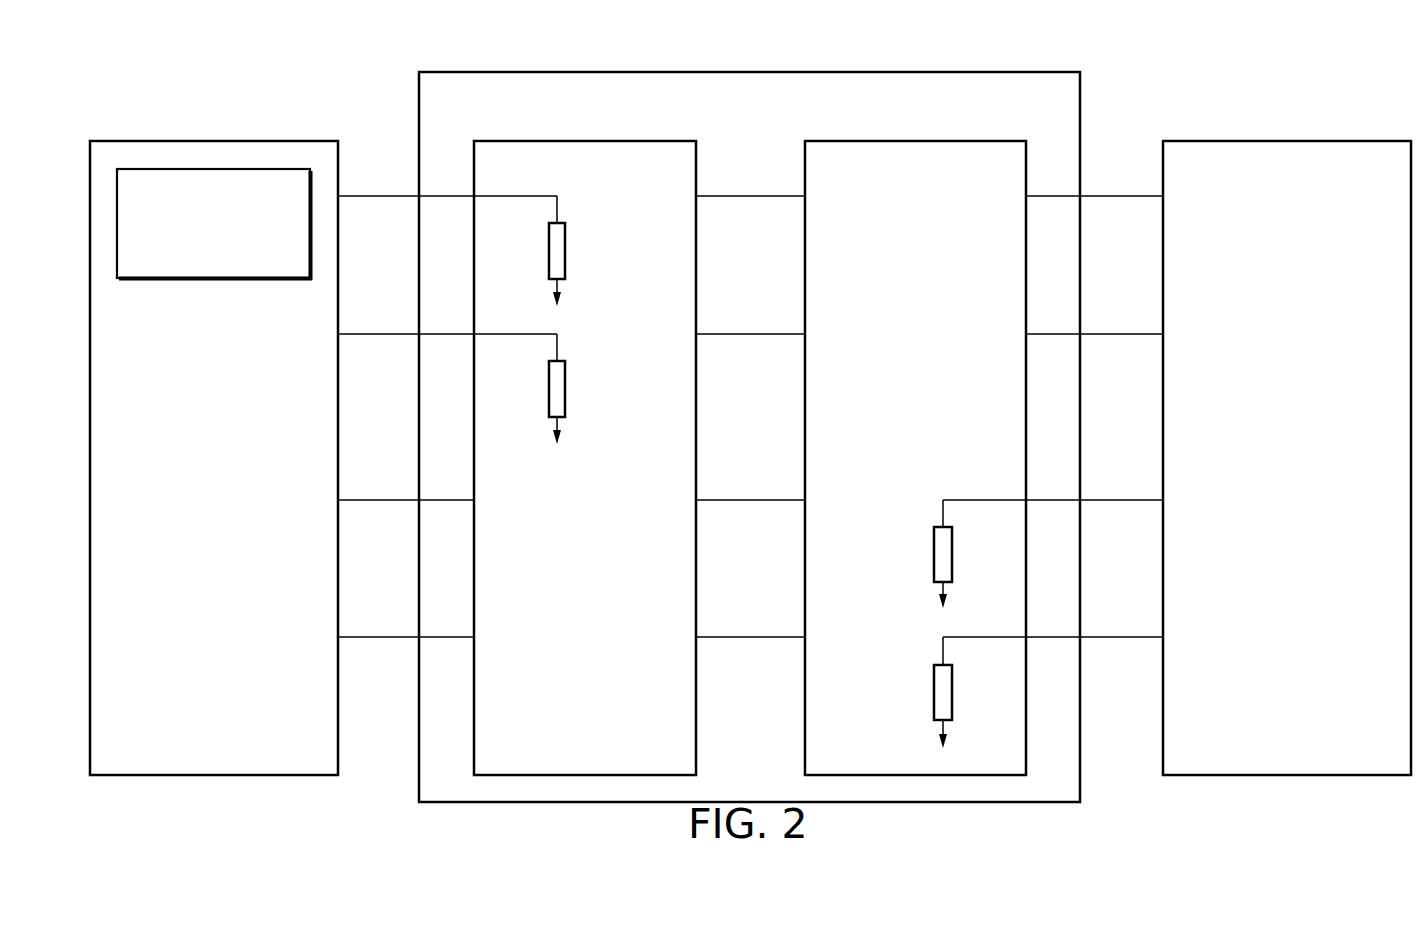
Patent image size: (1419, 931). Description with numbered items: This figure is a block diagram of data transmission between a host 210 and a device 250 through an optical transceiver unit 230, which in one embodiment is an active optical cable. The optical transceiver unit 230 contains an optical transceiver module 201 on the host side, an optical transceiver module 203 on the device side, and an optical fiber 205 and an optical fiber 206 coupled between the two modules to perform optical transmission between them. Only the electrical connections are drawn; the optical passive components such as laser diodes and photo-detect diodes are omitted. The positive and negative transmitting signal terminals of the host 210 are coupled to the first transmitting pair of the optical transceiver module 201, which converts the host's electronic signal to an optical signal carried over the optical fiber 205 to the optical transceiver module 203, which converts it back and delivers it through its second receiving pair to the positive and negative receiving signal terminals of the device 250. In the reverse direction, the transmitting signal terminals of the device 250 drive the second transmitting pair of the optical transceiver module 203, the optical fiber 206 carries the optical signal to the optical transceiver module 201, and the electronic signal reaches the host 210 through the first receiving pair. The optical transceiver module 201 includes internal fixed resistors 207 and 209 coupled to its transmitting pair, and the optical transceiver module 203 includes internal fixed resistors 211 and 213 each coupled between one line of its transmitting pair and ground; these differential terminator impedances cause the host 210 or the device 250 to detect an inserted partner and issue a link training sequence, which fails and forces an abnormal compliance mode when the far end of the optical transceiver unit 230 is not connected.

The optical transceiver module 201 is at (580, 140).
The optical transceiver module 203 is at (912, 140).
The optical fiber 205 is at (752, 196).
The optical fiber 206 is at (749, 500).
The internal fixed resistor 207 is at (566, 247).
The internal fixed resistor 209 is at (566, 385).
The host 210 is at (212, 140).
The internal fixed resistor 211 is at (933, 552).
The internal fixed resistor 213 is at (933, 690).
The optical transceiver unit 230 is at (752, 72).
The device 250 is at (1278, 140).